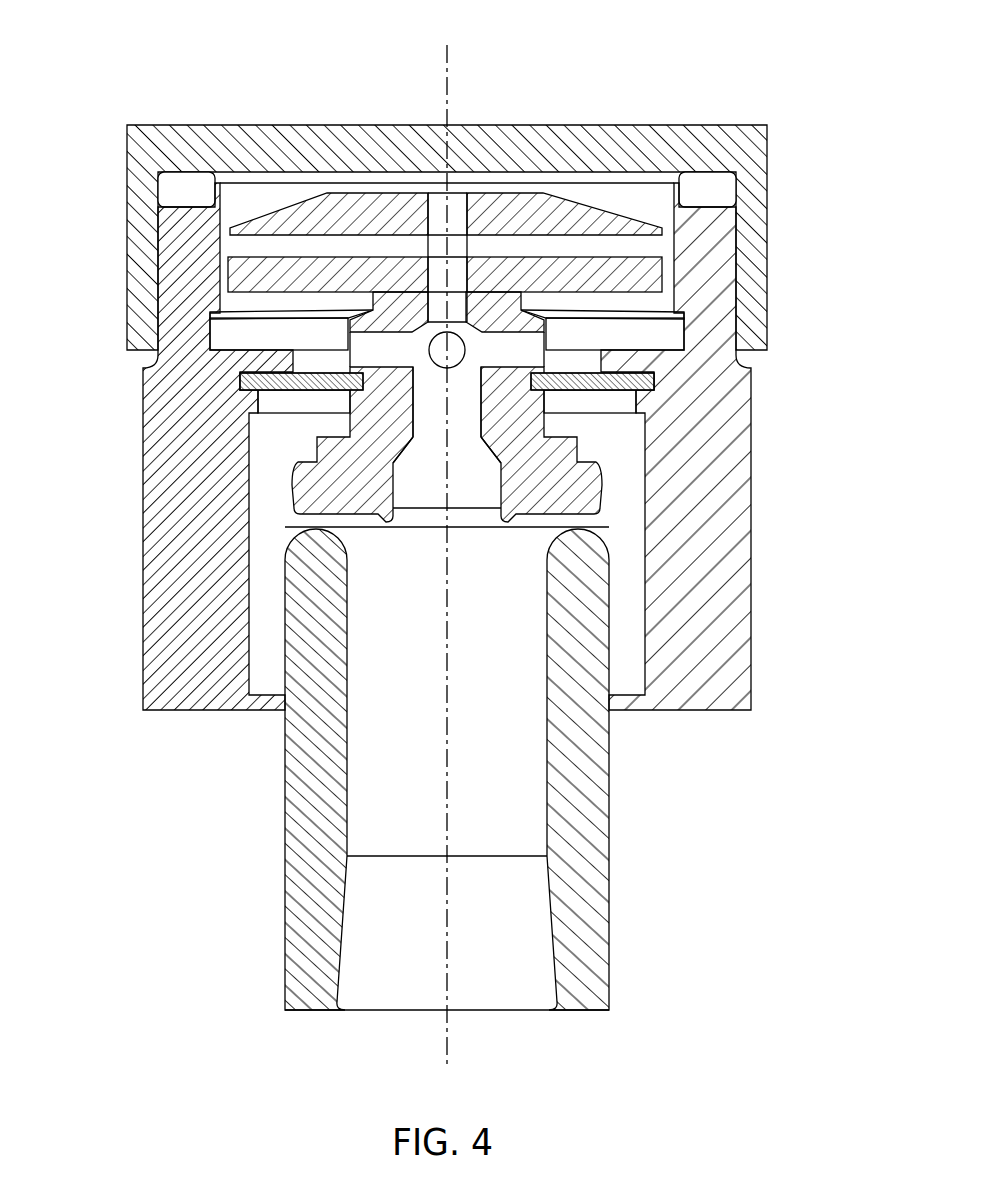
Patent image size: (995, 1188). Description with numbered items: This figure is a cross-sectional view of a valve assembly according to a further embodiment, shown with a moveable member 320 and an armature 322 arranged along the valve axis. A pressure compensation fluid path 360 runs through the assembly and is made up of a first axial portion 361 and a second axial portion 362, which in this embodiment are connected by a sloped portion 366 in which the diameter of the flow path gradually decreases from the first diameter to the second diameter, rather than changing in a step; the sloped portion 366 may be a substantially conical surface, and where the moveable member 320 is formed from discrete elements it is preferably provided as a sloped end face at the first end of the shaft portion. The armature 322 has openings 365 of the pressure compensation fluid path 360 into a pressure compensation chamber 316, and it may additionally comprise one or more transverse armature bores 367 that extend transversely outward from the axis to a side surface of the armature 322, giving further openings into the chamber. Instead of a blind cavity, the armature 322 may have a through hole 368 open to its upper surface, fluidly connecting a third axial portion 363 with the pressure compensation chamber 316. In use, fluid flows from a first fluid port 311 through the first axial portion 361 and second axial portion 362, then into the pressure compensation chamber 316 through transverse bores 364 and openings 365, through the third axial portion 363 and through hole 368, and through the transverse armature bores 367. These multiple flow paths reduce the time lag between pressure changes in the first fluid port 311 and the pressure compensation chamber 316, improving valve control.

The first fluid port 311 is at (470, 977).
The pressure compensation chamber 316 is at (250, 197).
The moveable member 320 is at (597, 202).
The armature 322 is at (377, 210).
The pressure compensation fluid path 360 is at (460, 535).
The first axial portion 361 is at (483, 487).
The second axial portion 362 is at (462, 415).
The third axial portion 363 is at (430, 290).
The transverse bores 364 is at (523, 315).
The openings 365 is at (550, 340).
The sloped portion 366 is at (490, 458).
The transverse armature bores 367 is at (632, 247).
The through hole 368 is at (455, 210).